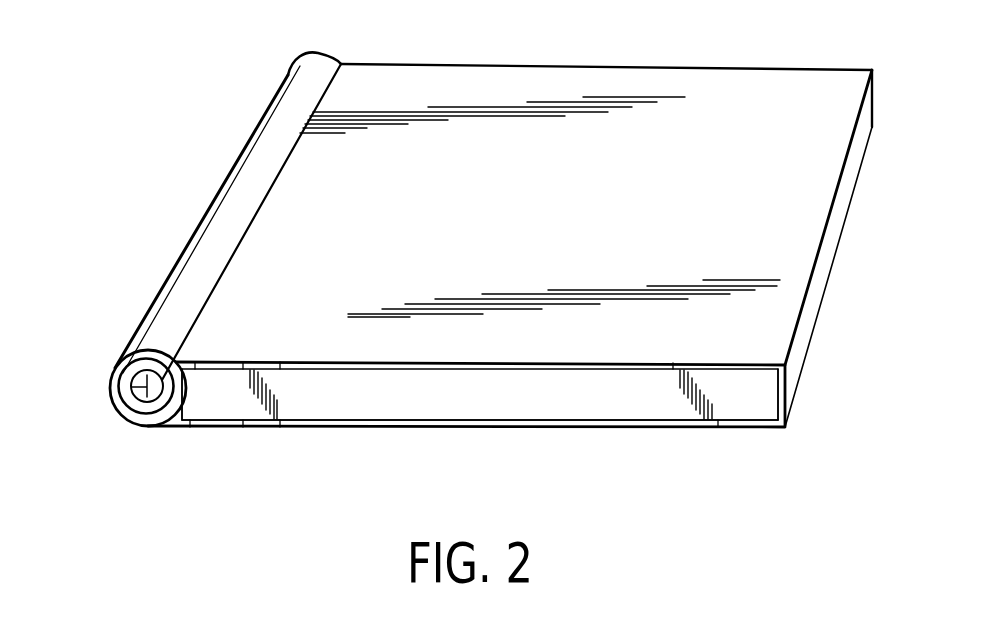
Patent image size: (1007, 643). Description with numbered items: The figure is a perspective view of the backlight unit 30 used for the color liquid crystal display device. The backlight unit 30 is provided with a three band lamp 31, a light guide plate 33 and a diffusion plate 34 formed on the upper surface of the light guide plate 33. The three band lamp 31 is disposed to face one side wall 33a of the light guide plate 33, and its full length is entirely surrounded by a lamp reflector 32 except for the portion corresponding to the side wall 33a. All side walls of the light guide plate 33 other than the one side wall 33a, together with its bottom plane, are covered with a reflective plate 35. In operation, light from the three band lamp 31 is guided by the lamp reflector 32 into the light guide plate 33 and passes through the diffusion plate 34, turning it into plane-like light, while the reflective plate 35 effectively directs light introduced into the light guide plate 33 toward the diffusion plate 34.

The backlight unit 30 is at (168, 189).
The three band lamp 31 is at (122, 398).
The lamp reflector 32 is at (167, 312).
The light guide plate 33 is at (430, 407).
The side wall of the light guide plate 33a is at (178, 395).
The diffusion plate 34 is at (735, 365).
The reflective plate 35 is at (620, 423).